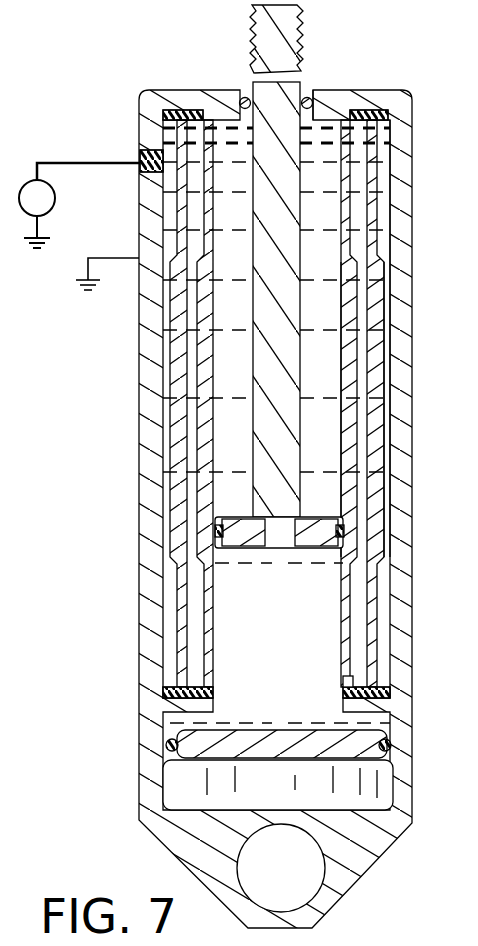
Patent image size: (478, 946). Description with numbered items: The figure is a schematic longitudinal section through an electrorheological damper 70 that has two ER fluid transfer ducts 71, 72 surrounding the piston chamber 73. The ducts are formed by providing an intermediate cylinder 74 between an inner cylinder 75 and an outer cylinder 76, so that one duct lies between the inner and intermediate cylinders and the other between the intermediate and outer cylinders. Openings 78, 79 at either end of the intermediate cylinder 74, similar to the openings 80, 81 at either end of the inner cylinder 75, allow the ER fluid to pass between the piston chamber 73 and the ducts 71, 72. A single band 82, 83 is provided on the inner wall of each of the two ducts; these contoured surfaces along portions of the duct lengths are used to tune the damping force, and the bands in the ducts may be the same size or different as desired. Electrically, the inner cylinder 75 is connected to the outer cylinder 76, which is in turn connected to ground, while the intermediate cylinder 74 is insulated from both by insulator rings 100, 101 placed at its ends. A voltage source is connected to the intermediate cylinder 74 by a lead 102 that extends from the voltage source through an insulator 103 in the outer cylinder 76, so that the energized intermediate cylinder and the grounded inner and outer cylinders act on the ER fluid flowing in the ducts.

The damper 70 is at (152, 86).
The insulator ring 100 is at (185, 110).
The opening 80 is at (313, 92).
The opening 78 is at (372, 130).
The inner cylinder 75 is at (350, 160).
The outer cylinder 76 is at (400, 178).
The ER fluid transfer duct 72 is at (382, 215).
The ER fluid transfer duct 71 is at (355, 248).
The piston chamber 73 is at (227, 440).
The band 82 is at (350, 430).
The band 83 is at (398, 470).
The intermediate cylinder 74 is at (378, 492).
The opening 81 is at (343, 670).
The opening 79 is at (390, 672).
The insulator ring 101 is at (165, 712).
The lead 102 is at (85, 165).
The insulator 103 is at (152, 150).